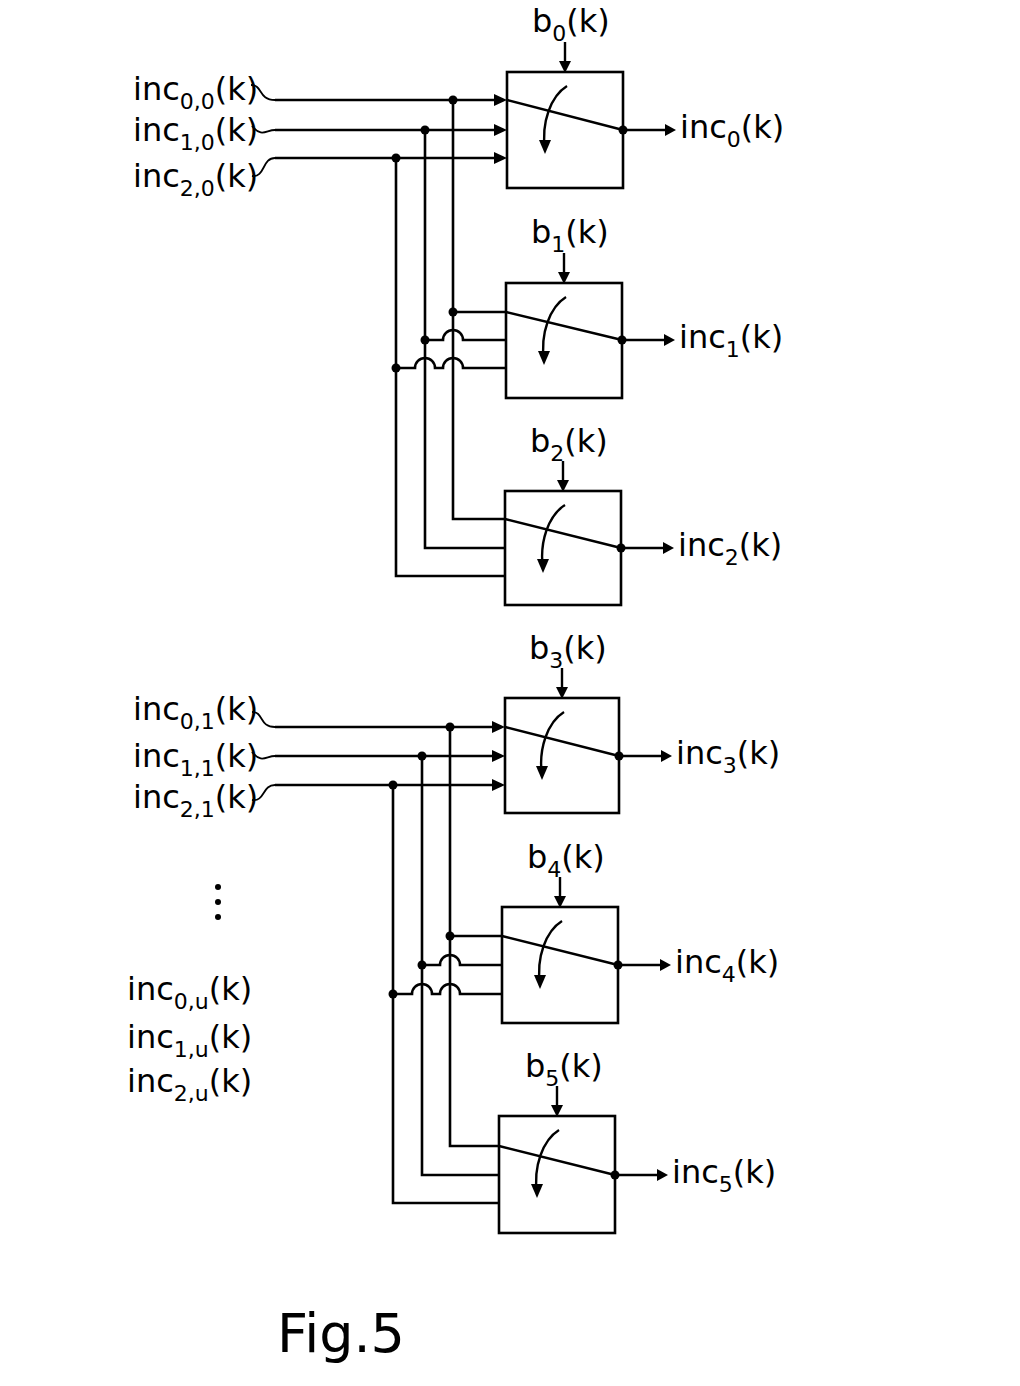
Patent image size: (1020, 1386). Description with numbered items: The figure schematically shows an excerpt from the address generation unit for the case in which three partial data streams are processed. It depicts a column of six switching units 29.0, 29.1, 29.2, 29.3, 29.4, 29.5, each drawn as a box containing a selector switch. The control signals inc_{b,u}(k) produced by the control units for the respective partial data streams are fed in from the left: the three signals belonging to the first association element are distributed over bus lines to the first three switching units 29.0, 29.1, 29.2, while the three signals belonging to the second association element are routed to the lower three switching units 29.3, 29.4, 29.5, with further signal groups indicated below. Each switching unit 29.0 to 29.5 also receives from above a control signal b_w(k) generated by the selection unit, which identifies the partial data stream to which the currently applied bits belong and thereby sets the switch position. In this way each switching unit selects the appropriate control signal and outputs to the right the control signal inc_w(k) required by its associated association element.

The switching unit 29.0 is at (623, 85).
The switching unit 29.1 is at (622, 296).
The switching unit 29.2 is at (621, 504).
The switching unit 29.3 is at (619, 711).
The switching unit 29.4 is at (618, 920).
The switching unit 29.5 is at (615, 1129).